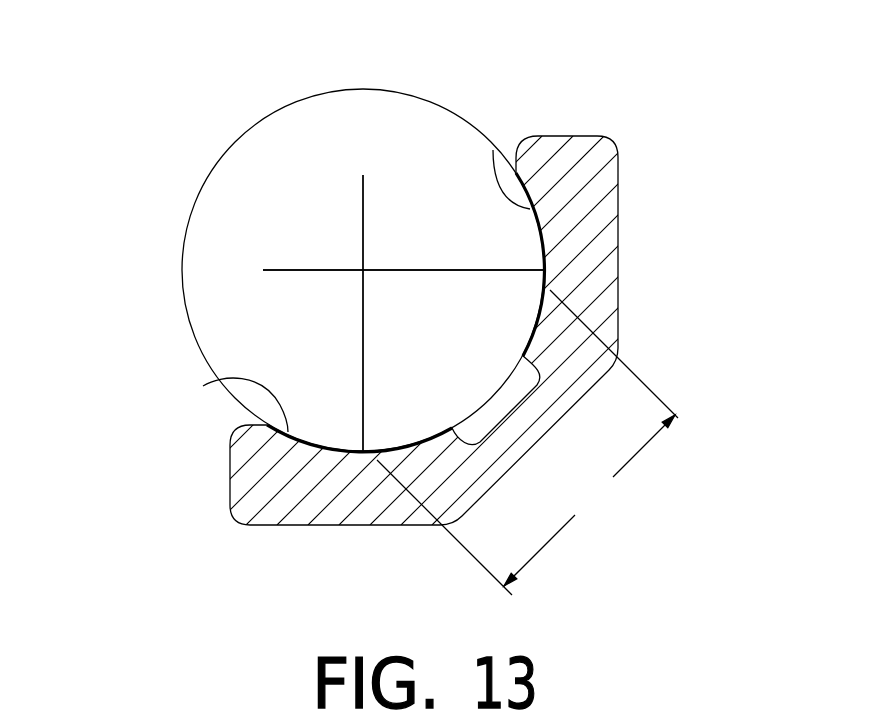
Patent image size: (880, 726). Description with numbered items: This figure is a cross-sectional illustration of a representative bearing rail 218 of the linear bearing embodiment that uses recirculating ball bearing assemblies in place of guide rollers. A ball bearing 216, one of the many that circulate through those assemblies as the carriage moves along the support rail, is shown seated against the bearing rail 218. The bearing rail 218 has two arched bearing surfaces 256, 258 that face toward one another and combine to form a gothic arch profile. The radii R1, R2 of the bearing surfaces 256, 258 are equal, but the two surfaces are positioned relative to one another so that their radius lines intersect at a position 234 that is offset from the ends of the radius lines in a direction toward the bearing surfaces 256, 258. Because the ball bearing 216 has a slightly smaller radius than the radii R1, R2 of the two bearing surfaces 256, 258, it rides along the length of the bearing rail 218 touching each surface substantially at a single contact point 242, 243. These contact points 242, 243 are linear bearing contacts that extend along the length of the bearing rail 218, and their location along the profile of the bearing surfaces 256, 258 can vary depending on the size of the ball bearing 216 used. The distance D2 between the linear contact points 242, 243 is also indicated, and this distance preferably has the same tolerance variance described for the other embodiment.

The ball bearing 216 is at (268, 115).
The bearing rail 218 is at (607, 238).
The intersection position of radius lines 234 is at (363, 270).
The contact point 242 is at (545, 278).
The contact point 243 is at (372, 456).
The arched bearing surface 256 is at (493, 150).
The arched bearing surface 258 is at (203, 386).
The radius of bearing surface R1 is at (283, 273).
The radius of bearing surface R2 is at (363, 215).
The distance between contact points D2 is at (527, 442).